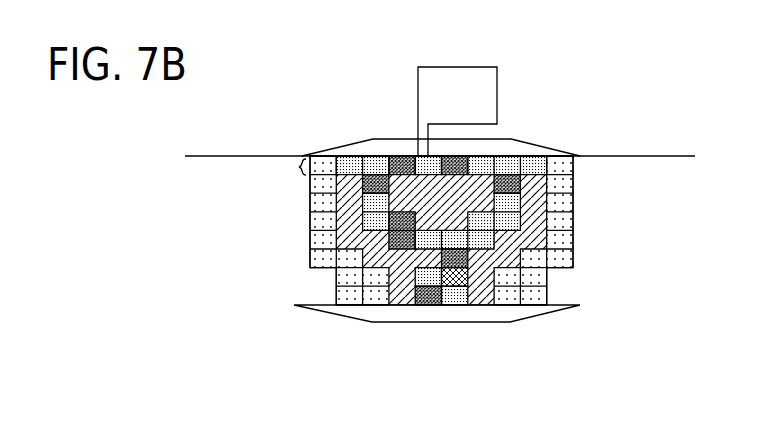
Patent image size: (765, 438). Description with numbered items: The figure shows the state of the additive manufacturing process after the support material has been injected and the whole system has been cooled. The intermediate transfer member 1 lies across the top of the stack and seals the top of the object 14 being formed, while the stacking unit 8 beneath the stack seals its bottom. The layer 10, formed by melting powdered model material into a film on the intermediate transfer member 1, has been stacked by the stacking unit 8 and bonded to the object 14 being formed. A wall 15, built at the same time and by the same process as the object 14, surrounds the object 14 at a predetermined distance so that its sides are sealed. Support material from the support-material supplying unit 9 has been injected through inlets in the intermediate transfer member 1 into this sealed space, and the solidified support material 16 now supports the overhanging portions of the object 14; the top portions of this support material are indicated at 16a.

The intermediate transfer member 1 is at (628, 156).
The stacking unit 8 is at (545, 339).
The support-material supplying unit 9 is at (480, 68).
The layer 10 is at (298, 167).
The object being formed 14 is at (374, 203).
The wall 15 is at (562, 222).
The support material 16 is at (528, 224).
The top surface portion 16a is at (420, 153).